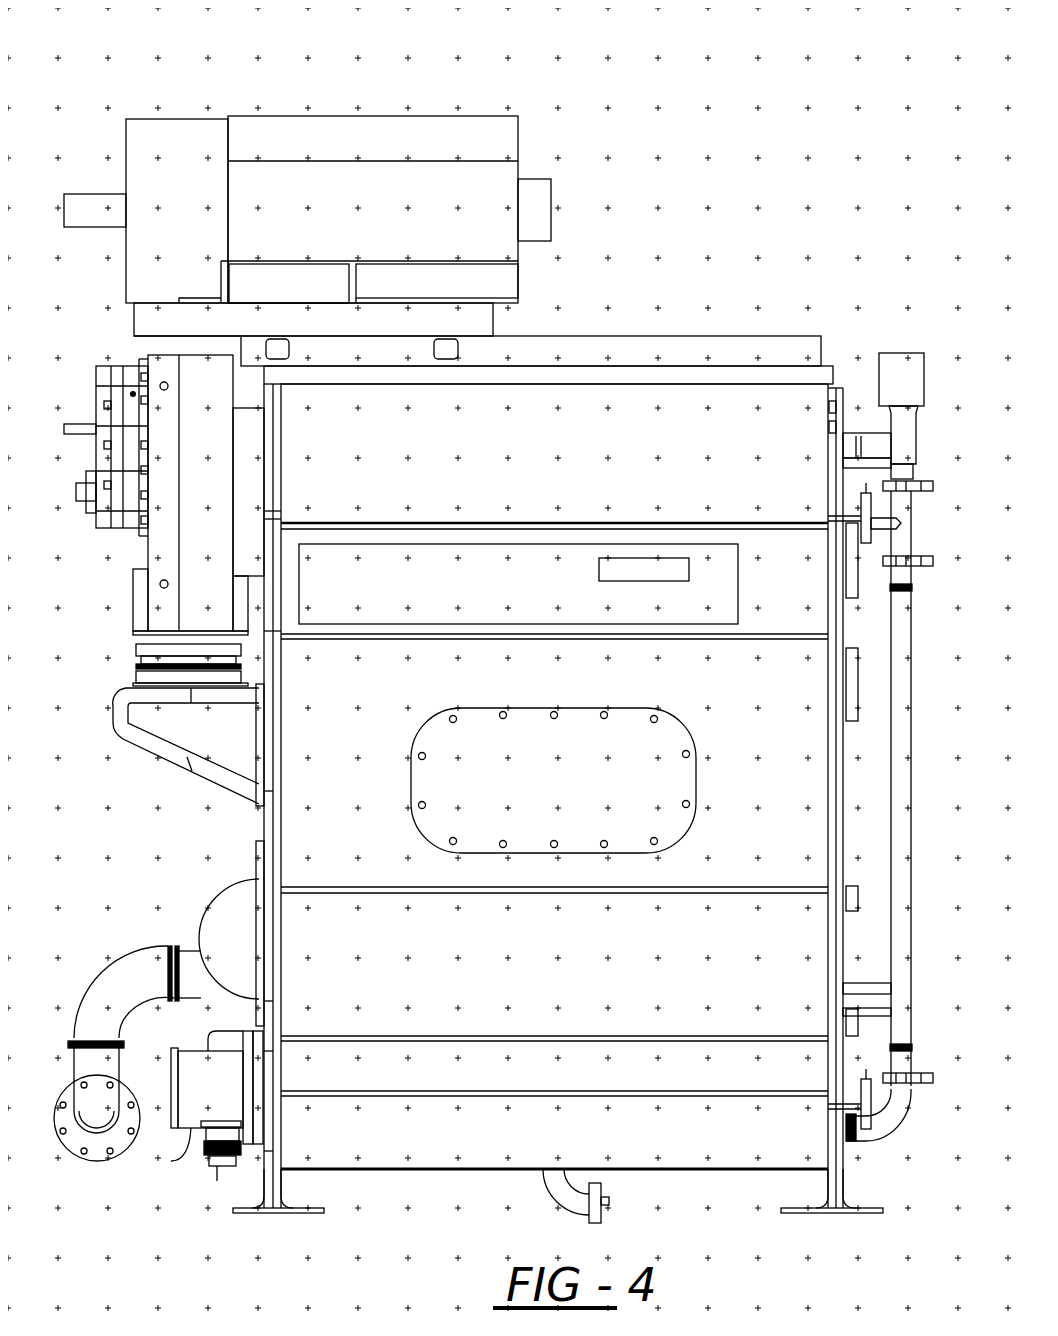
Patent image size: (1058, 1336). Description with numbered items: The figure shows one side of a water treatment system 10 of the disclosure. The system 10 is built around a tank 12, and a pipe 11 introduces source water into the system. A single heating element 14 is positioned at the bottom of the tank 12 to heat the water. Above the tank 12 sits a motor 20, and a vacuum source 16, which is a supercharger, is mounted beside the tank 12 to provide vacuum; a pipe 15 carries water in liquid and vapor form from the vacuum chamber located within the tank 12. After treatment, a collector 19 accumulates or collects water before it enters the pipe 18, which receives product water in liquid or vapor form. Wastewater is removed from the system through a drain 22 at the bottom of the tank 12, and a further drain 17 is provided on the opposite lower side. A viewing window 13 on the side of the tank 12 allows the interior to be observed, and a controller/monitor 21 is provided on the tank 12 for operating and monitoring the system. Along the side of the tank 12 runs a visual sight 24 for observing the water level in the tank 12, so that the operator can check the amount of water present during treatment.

The system 10 is at (675, 235).
The pipe 11 is at (215, 1168).
The tank 12 is at (843, 392).
The viewing window 13 is at (695, 778).
The heating element 14 is at (178, 1132).
The pipe 15 is at (162, 742).
The vacuum source 16 is at (147, 553).
The drain 17 is at (895, 1138).
The pipe 18 is at (73, 1062).
The collector 19 is at (224, 884).
The motor 20 is at (352, 115).
The controller/monitor 21 is at (710, 602).
The drain 22 is at (555, 1200).
The visual sight 24 is at (912, 748).